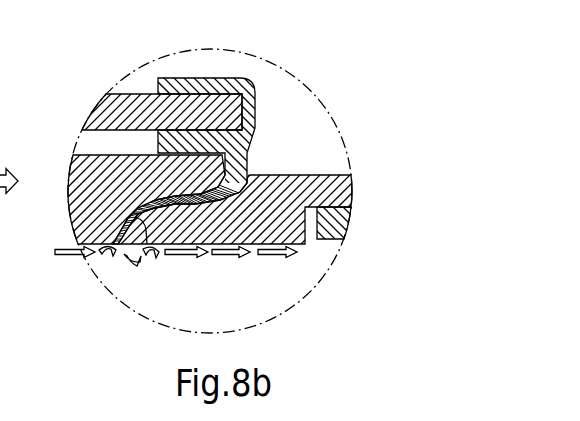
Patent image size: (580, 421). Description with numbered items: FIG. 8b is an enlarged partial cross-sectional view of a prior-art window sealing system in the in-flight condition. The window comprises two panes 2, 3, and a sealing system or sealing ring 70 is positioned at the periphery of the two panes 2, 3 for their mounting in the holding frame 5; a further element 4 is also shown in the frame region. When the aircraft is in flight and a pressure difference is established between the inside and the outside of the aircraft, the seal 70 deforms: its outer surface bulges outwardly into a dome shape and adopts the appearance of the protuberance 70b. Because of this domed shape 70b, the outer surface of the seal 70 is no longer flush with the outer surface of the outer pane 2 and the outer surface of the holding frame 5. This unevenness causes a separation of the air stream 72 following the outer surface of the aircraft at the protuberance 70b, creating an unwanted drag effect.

The outer pane 2 is at (74, 214).
The pane 3 is at (102, 107).
The insert 4 is at (350, 212).
The holding frame 5 is at (300, 173).
The sealing system 70 is at (272, 97).
The protuberance 70b is at (118, 258).
The air stream 72 is at (107, 266).